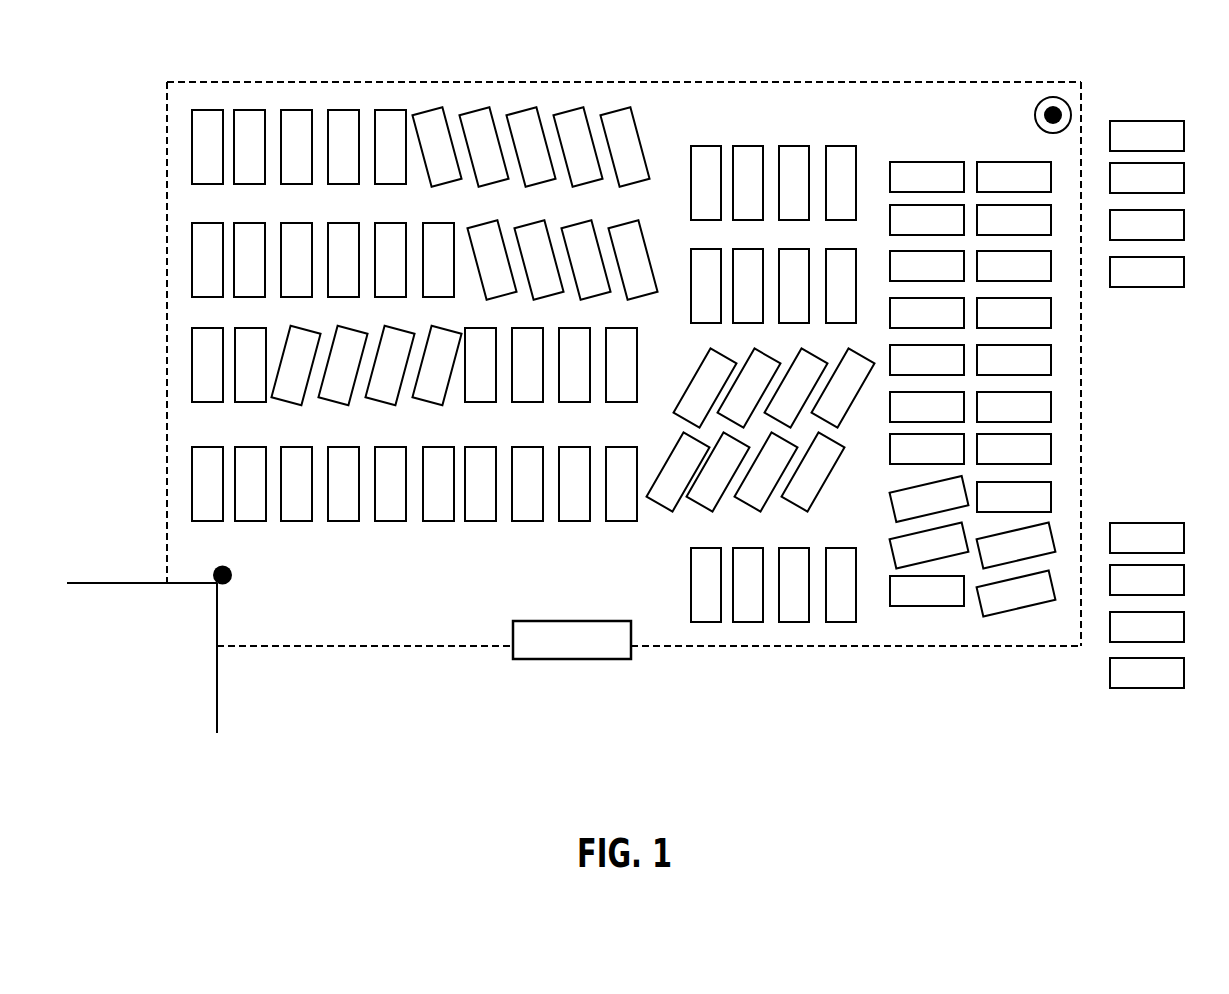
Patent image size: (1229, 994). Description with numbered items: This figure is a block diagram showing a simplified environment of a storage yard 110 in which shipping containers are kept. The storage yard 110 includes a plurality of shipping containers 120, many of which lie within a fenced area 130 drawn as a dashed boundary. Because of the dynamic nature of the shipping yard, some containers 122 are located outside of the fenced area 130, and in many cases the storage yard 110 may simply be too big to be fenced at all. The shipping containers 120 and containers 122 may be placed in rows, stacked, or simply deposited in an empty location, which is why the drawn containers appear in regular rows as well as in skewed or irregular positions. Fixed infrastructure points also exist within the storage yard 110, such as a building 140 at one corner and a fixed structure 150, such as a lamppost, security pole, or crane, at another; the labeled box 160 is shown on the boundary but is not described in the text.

The storage yard 110 is at (864, 36).
The shipping containers 120 is at (292, 512).
The containers outside the fenced area 122 is at (1138, 677).
The fenced area 130 is at (267, 83).
The building 140 is at (185, 648).
The fixed structure 150 is at (1041, 101).
The label box 160 is at (590, 653).